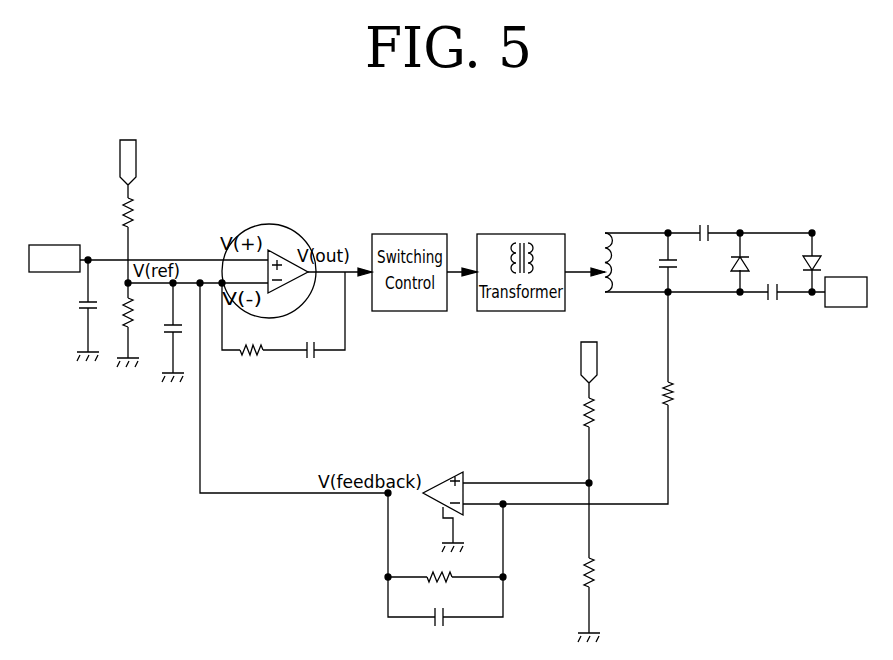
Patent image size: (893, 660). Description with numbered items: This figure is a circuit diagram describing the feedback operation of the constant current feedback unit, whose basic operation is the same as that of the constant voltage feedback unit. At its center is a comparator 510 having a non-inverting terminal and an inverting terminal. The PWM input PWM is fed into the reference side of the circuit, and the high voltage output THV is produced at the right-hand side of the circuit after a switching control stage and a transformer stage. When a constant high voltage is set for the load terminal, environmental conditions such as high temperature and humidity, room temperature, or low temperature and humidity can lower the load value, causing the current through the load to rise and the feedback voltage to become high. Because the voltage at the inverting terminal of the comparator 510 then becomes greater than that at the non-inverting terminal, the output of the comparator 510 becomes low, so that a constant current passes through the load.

The comparator 510 is at (270, 223).
The PWM input PWM is at (54, 258).
The THV output THV is at (846, 292).